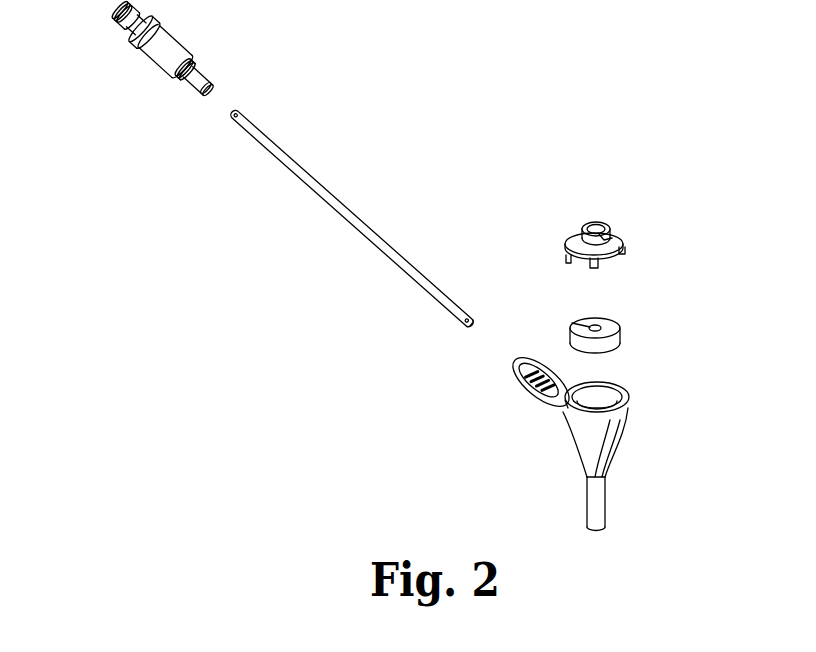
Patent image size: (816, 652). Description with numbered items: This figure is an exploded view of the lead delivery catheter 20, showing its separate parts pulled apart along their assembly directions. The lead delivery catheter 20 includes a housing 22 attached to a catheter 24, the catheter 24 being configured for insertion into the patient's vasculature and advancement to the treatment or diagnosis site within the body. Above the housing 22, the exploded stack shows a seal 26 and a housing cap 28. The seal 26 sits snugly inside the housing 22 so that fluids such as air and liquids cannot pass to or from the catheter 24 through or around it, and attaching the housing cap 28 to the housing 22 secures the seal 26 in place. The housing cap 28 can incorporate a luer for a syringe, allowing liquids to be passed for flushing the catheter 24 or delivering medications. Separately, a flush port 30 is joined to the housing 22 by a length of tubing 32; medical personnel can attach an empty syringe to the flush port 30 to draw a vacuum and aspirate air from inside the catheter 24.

The lead delivery catheter 20 is at (558, 92).
The housing 22 is at (583, 440).
The catheter 24 is at (597, 500).
The seal 26 is at (620, 327).
The housing cap 28 is at (622, 238).
The flush port 30 is at (160, 50).
The tubing 32 is at (294, 172).